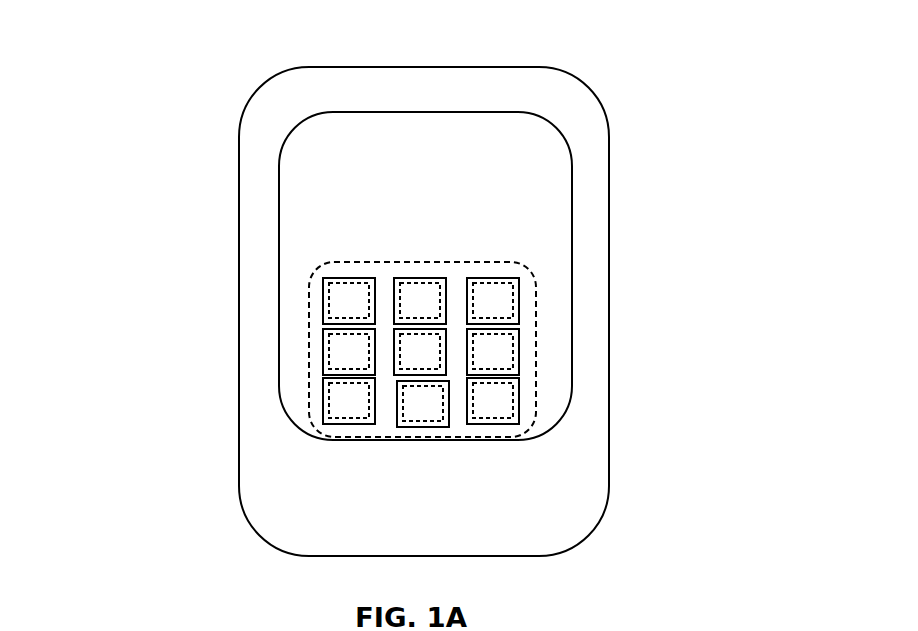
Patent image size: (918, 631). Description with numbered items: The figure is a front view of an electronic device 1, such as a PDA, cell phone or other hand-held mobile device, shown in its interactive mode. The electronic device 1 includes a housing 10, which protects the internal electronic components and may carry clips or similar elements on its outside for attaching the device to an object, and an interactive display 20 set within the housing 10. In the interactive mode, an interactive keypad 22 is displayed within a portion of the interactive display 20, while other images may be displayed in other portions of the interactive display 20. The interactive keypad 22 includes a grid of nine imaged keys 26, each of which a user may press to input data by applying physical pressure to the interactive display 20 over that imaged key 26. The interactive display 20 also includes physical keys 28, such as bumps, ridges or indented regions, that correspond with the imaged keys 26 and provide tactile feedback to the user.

The electronic device 1 is at (152, 140).
The housing 10 is at (502, 66).
The interactive display 20 is at (495, 220).
The interactive keypad 22 is at (535, 354).
The imaged key 26 is at (512, 405).
The physical key 28 is at (323, 393).